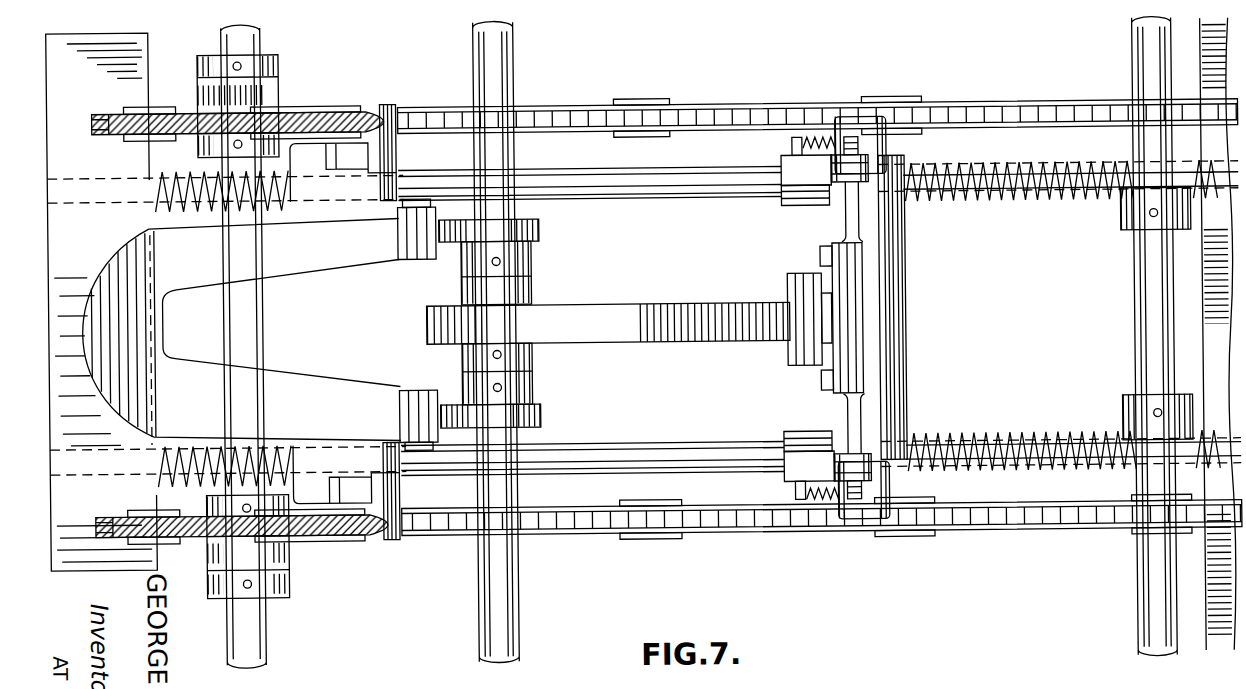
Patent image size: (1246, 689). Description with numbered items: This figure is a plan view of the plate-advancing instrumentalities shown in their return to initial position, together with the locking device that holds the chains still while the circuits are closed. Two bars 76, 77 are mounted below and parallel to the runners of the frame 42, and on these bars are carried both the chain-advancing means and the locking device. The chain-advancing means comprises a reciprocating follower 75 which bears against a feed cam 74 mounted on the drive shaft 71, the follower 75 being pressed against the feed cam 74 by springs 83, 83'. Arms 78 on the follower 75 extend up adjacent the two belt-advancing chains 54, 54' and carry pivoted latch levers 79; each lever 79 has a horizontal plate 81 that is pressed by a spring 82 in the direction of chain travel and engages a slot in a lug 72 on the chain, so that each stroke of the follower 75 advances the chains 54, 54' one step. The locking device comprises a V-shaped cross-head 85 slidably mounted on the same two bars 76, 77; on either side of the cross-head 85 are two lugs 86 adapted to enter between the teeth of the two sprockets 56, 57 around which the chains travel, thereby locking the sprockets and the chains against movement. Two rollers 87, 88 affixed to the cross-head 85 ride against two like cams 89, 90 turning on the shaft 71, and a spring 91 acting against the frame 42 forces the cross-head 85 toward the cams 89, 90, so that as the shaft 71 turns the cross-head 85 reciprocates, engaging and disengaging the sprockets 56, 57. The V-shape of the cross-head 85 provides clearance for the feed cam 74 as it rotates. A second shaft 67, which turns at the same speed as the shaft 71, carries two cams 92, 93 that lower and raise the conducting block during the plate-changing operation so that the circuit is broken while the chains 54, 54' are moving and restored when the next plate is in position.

The frame 42 is at (126, 53).
The chain 54 is at (822, 537).
The chain 54' is at (817, 97).
The sprocket 56 is at (342, 526).
The sprocket 57 is at (333, 107).
The shaft 67 is at (1150, 608).
The drive shaft 71 is at (503, 606).
The lug 72 is at (618, 133).
The feed cam 74 is at (612, 333).
The follower 75 is at (892, 375).
The bar 76 is at (705, 437).
The bar 77 is at (707, 170).
The arm 78 is at (784, 159).
The lever 79 is at (892, 151).
The horizontal plate 81 is at (880, 122).
The spring 82 is at (821, 144).
The spring 83 is at (1074, 437).
The spring 83' is at (1071, 200).
The cross-head 85 is at (357, 355).
The lug 86 is at (402, 151).
The roller 87 is at (436, 408).
The roller 88 is at (413, 265).
The cam 89 is at (532, 407).
The cam 90 is at (532, 229).
The spring 91 is at (188, 167).
The cam 92 is at (1123, 432).
The cam 93 is at (1118, 205).